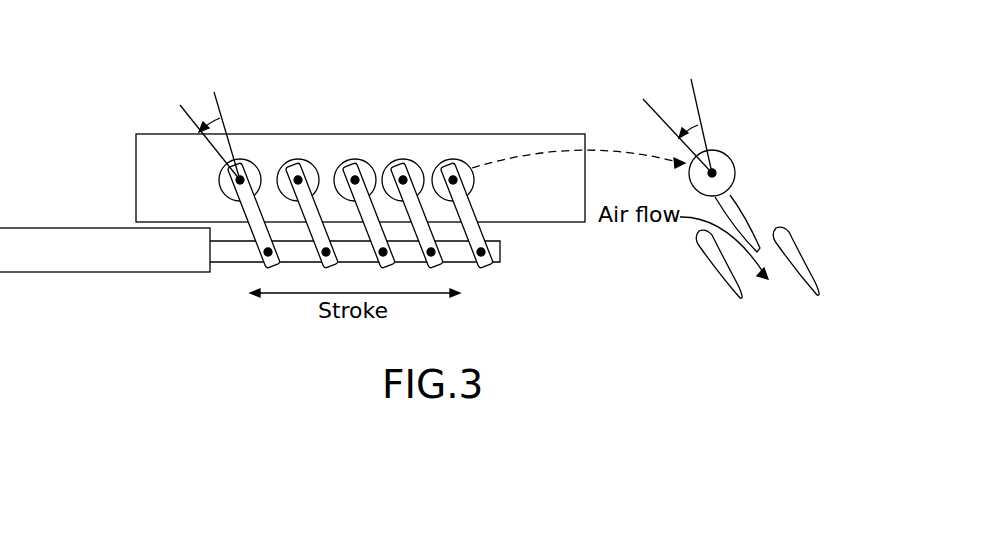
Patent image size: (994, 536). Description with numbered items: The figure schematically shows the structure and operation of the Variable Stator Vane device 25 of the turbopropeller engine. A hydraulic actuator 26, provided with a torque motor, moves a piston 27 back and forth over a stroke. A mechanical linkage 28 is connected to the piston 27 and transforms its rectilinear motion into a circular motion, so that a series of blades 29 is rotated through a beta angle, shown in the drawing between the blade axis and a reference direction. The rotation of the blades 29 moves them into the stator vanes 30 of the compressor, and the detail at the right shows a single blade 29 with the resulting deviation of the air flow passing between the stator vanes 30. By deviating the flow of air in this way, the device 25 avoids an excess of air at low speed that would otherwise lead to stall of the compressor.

The VSV device 25 is at (115, 118).
The hydraulic actuator 26 is at (62, 273).
The piston 27 is at (496, 262).
The mechanical linkage 28 is at (482, 210).
The blades 29 is at (735, 212).
The stator vanes 30 is at (734, 285).